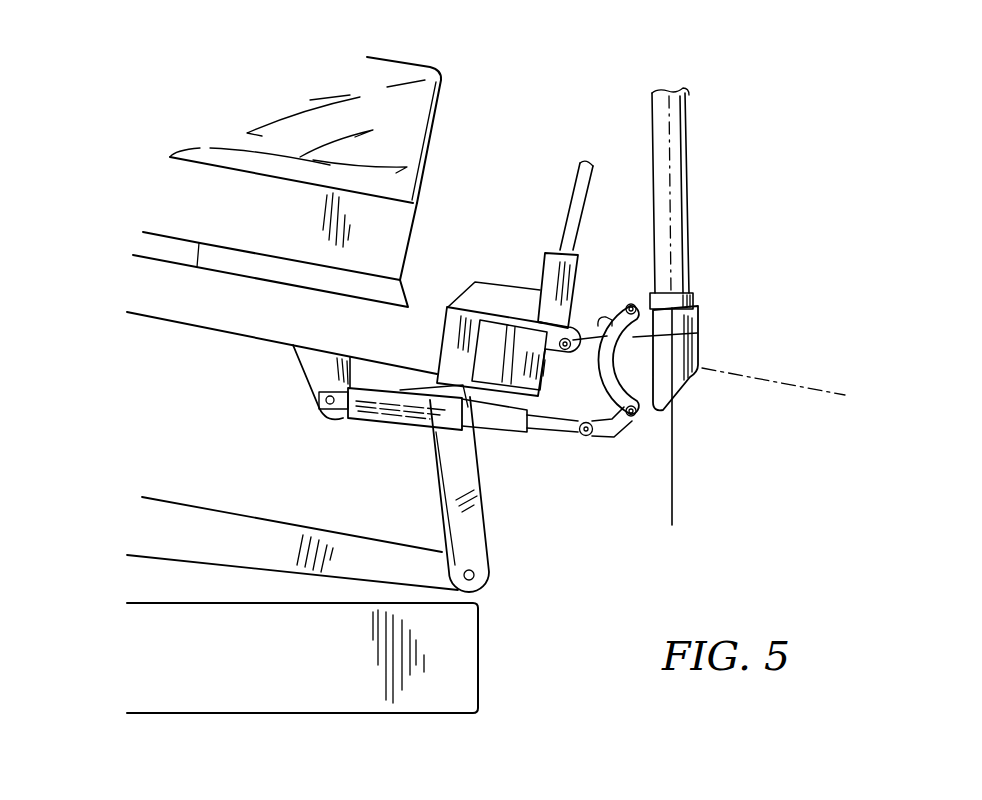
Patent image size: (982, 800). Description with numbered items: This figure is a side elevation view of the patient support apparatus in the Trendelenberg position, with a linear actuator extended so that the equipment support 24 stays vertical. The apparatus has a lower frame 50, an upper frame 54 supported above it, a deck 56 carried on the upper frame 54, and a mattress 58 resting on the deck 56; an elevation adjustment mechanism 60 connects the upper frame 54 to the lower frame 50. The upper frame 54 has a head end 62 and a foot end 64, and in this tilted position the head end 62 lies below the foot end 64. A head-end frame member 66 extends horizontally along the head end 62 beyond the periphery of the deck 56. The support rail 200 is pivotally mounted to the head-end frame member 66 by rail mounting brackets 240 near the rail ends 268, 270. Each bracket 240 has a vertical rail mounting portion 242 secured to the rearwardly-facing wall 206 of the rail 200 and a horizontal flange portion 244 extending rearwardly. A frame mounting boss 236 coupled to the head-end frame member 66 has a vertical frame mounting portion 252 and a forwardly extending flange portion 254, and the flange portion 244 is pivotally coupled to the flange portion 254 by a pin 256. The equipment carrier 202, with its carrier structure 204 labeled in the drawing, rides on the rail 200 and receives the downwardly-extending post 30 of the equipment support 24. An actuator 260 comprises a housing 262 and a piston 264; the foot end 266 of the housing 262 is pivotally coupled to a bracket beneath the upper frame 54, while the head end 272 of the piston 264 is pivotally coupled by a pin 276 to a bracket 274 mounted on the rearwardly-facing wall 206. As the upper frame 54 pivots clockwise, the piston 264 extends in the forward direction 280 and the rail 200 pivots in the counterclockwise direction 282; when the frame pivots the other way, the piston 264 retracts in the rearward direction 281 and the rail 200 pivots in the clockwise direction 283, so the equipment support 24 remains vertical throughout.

The equipment support 24 is at (692, 291).
The post 30 is at (683, 142).
The lower frame 50 is at (462, 645).
The upper frame 54 is at (182, 303).
The deck 56 is at (400, 223).
The mattress 58 is at (420, 108).
The elevation adjustment mechanism 60 is at (223, 505).
The head end 62 is at (739, 349).
The foot end 64 is at (113, 180).
The head-end frame member 66 is at (473, 367).
The support rail 200 is at (618, 298).
The equipment carrier 202 is at (707, 318).
The mounting bracket 204 is at (695, 298).
The rearwardly-facing wall 206 is at (597, 318).
The frame mounting boss 236 is at (495, 357).
The rail mounting bracket 240 is at (578, 312).
The rail mounting portion 242 is at (697, 310).
The flange portion 244 is at (563, 355).
The frame mounting portion 252 is at (522, 377).
The flange portion 254 is at (548, 338).
The pin 256 is at (693, 335).
The actuator 260 is at (437, 477).
The housing 262 is at (407, 412).
The piston 264 is at (542, 430).
The foot end 266 is at (323, 417).
The end 268 is at (313, 360).
The end 270 is at (320, 400).
The head end 272 is at (560, 438).
The bracket 274 is at (608, 442).
The pin 276 is at (592, 446).
The forward direction 280 is at (512, 545).
The rearward direction 281 is at (505, 575).
The counterclockwise direction 282 is at (825, 435).
The clockwise direction 283 is at (840, 463).